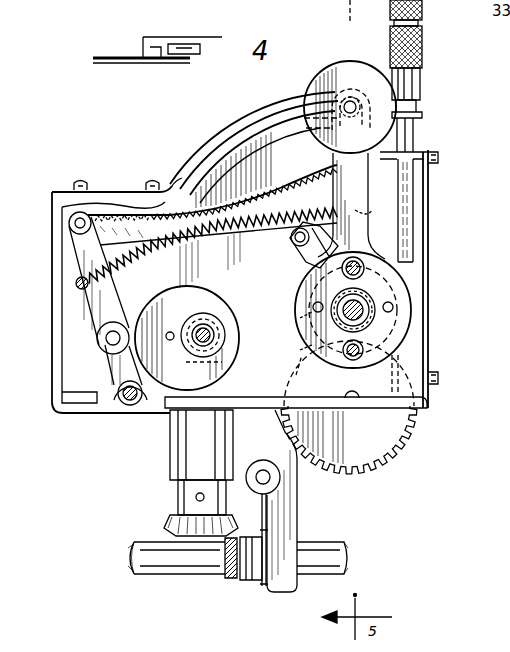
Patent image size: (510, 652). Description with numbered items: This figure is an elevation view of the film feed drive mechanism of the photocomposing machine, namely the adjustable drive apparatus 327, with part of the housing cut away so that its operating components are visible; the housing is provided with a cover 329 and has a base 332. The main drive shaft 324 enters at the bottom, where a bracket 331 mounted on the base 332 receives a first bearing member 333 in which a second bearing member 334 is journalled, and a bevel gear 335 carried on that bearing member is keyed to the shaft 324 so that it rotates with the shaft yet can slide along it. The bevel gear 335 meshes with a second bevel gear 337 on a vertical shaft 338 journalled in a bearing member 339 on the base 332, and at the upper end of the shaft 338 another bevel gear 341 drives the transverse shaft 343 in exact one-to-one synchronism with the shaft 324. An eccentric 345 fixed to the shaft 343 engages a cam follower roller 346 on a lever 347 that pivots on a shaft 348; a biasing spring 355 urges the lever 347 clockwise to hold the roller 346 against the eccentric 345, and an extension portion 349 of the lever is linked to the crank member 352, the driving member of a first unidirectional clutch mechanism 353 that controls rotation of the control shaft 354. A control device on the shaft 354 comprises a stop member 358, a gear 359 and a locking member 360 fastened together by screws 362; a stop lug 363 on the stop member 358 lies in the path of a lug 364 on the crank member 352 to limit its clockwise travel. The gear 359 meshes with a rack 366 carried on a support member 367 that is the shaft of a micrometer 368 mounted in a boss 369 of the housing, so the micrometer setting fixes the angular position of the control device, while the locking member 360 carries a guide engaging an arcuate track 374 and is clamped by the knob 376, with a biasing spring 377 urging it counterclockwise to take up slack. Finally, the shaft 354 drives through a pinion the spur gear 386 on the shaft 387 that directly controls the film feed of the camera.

The shaft 324 is at (318, 562).
The adjustable drive apparatus 327 is at (180, 136).
The cover 329 is at (123, 190).
The bracket 331 is at (286, 502).
The base 332 is at (372, 418).
The first bearing member 333 is at (264, 586).
The second bearing member 334 is at (250, 578).
The bevel gear 335 is at (226, 573).
The second bevel gear 337 is at (181, 522).
The vertical shaft 338 is at (212, 462).
The bearing member 339 is at (172, 462).
The bevel gear 341 is at (302, 349).
The shaft 343 is at (212, 332).
The eccentric 345 is at (212, 306).
The cam follower roller 346 is at (128, 324).
The lever 347 is at (118, 366).
The shaft 348 is at (130, 406).
The extension portion 349 is at (92, 296).
The crank member 352 is at (300, 247).
The first unidirectional clutch mechanism 353 is at (382, 245).
The control shaft 354 is at (366, 311).
The biasing spring 355 is at (212, 205).
The stop member 358 is at (368, 296).
The gear 359 is at (300, 319).
The locking member 360 is at (358, 218).
The screws 362 is at (342, 372).
The stop lug 363 is at (296, 368).
The lug 364 is at (396, 365).
The rack 366 is at (432, 370).
The support member 367 is at (407, 193).
The micrometer 368 is at (416, 101).
The boss 369 is at (404, 146).
The arcuate track 374 is at (252, 128).
The knob 376 is at (358, 66).
The biasing spring 377 is at (302, 178).
The spur gear 386 is at (385, 478).
The shaft 387 is at (348, 424).